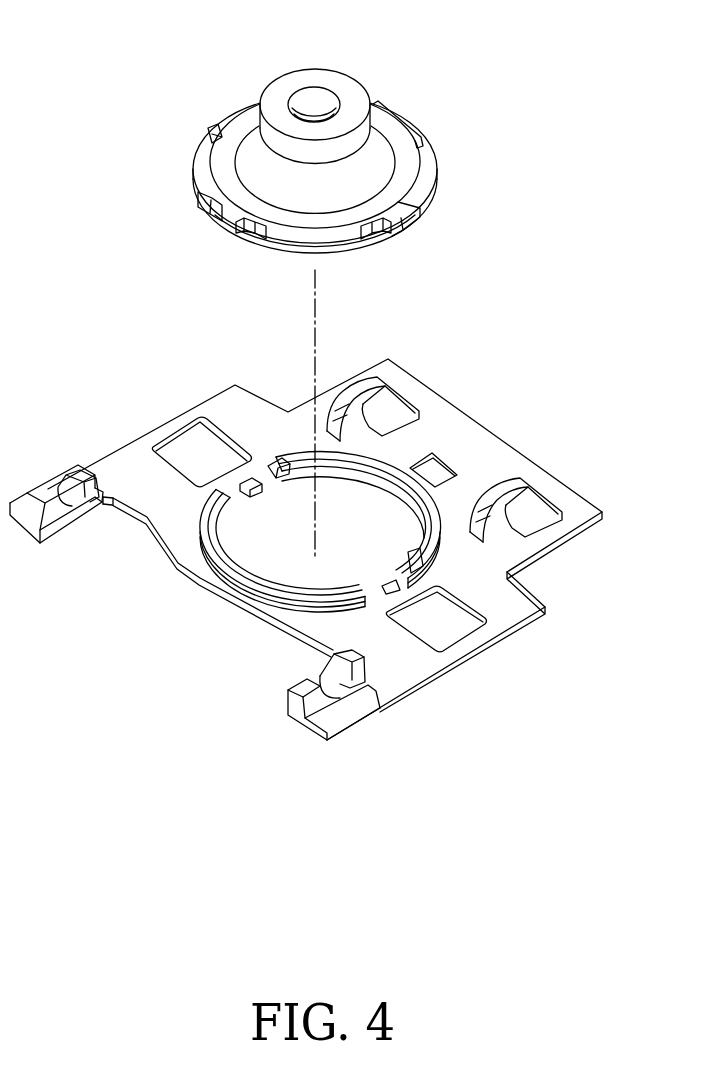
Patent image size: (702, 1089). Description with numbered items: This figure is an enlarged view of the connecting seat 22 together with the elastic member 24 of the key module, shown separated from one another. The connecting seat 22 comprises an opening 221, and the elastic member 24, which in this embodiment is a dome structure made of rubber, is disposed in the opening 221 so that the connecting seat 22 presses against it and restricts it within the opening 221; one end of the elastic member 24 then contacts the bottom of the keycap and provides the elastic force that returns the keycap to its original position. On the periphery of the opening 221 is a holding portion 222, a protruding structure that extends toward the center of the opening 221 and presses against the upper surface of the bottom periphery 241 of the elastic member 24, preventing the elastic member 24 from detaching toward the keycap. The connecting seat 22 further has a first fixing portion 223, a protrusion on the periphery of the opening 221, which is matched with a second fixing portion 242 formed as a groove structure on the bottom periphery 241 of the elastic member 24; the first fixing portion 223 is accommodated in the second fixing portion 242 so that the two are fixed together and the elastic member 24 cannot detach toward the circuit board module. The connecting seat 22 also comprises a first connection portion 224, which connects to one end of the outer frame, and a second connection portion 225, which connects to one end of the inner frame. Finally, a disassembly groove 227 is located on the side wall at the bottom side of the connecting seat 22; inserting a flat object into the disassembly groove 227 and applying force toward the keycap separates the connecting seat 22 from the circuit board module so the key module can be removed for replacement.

The elastic member 24 is at (282, 92).
The bottom periphery 241 is at (423, 190).
The second fixing portion 242 is at (398, 233).
The connecting seat 22 is at (138, 463).
The opening 221 is at (290, 490).
The holding portion 222 is at (428, 477).
The first fixing portion 223 is at (248, 482).
The first connection portion 224 is at (72, 503).
The second connection portion 225 is at (372, 383).
The disassembly groove 227 is at (217, 595).